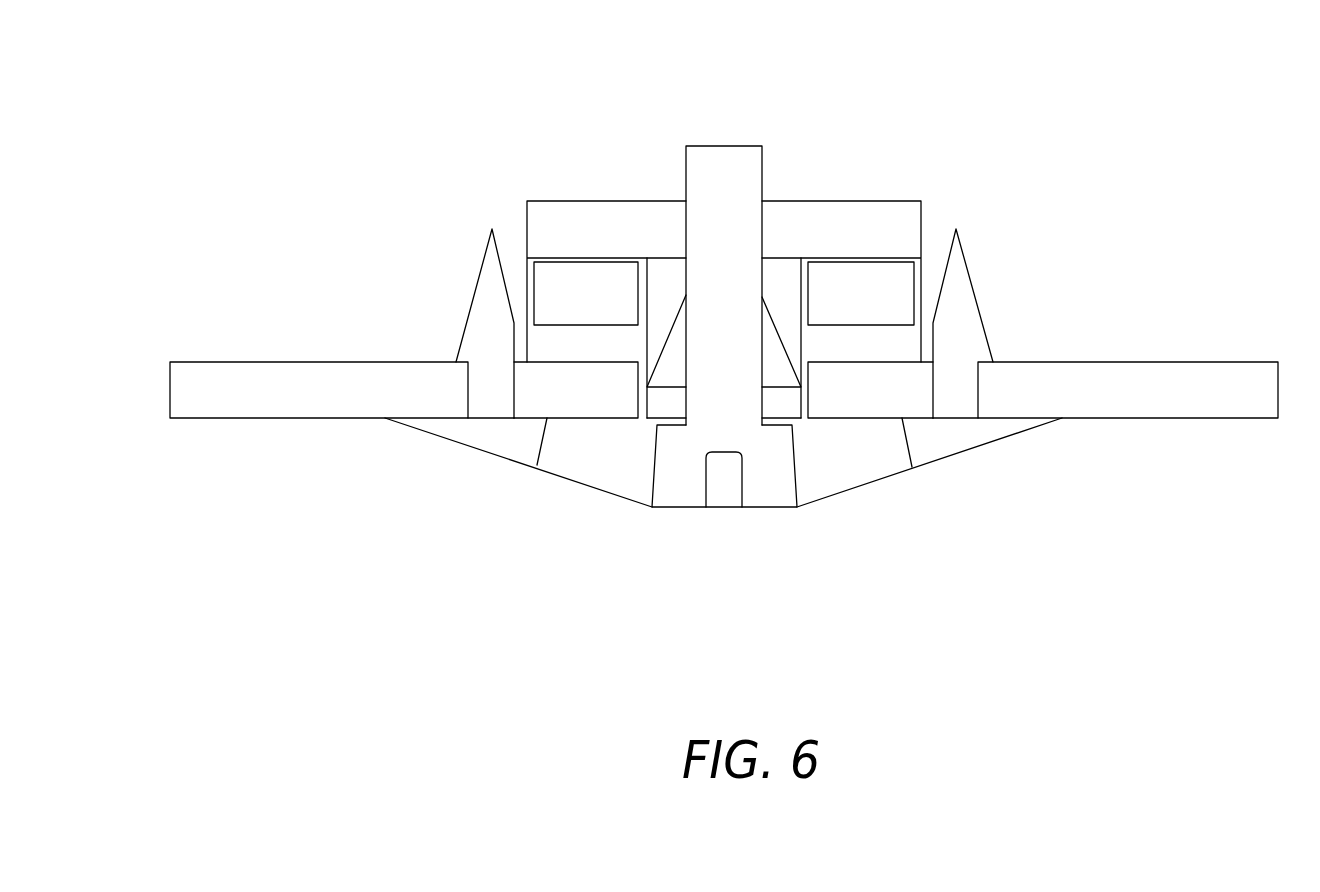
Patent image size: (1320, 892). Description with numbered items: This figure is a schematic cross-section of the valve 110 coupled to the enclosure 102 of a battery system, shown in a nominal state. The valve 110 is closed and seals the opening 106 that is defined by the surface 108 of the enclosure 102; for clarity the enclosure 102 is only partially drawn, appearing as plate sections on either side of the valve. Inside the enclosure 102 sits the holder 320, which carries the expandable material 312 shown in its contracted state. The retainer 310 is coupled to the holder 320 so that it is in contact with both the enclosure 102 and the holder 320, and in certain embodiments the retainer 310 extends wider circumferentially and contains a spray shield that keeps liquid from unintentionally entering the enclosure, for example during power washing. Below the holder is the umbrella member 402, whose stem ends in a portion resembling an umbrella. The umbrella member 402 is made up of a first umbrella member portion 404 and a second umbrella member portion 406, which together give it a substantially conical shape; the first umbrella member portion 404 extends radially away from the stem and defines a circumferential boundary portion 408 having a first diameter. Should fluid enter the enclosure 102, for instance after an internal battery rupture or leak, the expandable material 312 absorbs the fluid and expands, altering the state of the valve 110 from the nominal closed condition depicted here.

The enclosure 102 is at (207, 352).
The opening 106 is at (595, 420).
The surface 108 is at (362, 420).
The valve 110 is at (372, 142).
The retainer 310 is at (485, 277).
The expandable material 312 is at (572, 275).
The holder 320 is at (837, 215).
The umbrella member 402 is at (825, 540).
The first umbrella member portion 404 is at (717, 518).
The second umbrella member portion 406 is at (495, 468).
The circumferential boundary portion 408 is at (542, 437).